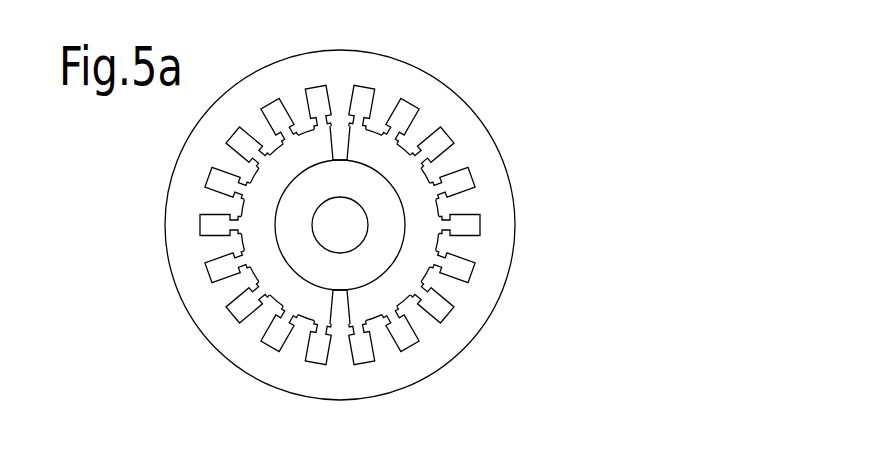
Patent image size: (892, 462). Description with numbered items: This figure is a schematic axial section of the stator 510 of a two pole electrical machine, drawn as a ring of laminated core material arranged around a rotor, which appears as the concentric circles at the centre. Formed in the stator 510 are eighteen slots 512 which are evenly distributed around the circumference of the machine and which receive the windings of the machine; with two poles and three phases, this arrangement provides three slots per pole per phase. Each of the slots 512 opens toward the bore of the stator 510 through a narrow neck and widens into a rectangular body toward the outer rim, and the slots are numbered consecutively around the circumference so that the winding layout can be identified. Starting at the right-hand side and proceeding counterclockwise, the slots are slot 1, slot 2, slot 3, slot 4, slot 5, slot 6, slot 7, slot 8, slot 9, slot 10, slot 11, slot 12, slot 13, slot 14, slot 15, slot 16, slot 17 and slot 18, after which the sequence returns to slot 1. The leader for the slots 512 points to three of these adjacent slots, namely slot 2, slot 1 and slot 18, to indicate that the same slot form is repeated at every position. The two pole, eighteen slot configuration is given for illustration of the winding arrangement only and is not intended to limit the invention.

The stator 510 is at (371, 200).
The slots 512 is at (503, 199).
The slot 1 is at (469, 225).
The slot 2 is at (460, 180).
The slot 3 is at (436, 141).
The slot 4 is at (400, 112).
The slot 5 is at (362, 95).
The slot 6 is at (318, 95).
The slot 7 is at (278, 113).
The slot 8 is at (244, 141).
The slot 9 is at (220, 181).
The slot 10 is at (207, 226).
The slot 11 is at (217, 270).
The slot 12 is at (237, 309).
The slot 13 is at (273, 339).
The slot 14 is at (315, 355).
The slot 15 is at (364, 355).
The slot 16 is at (406, 339).
The slot 17 is at (442, 308).
The slot 18 is at (465, 270).